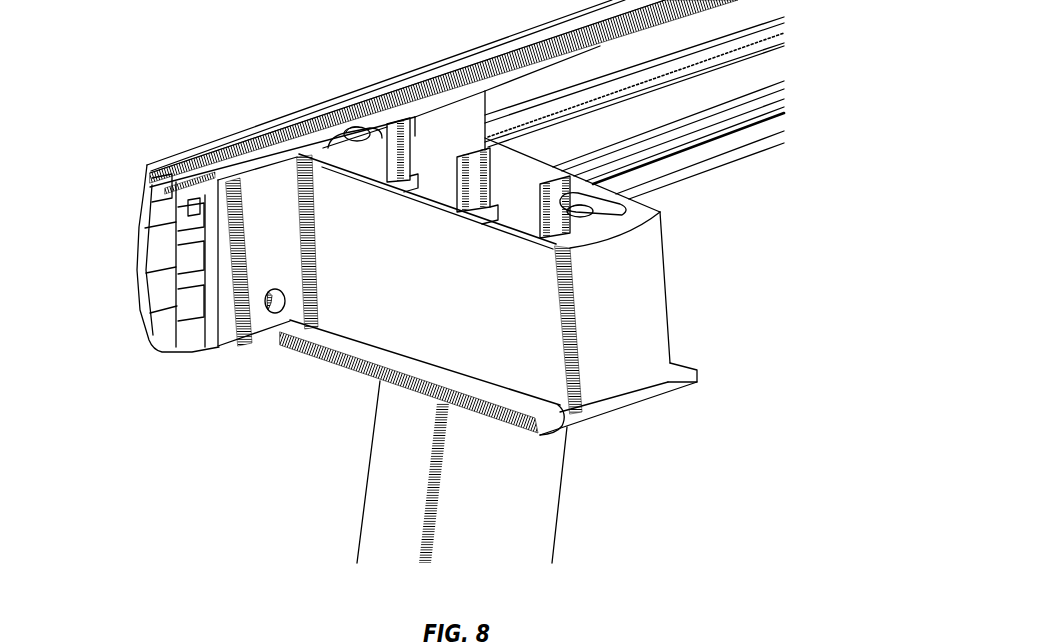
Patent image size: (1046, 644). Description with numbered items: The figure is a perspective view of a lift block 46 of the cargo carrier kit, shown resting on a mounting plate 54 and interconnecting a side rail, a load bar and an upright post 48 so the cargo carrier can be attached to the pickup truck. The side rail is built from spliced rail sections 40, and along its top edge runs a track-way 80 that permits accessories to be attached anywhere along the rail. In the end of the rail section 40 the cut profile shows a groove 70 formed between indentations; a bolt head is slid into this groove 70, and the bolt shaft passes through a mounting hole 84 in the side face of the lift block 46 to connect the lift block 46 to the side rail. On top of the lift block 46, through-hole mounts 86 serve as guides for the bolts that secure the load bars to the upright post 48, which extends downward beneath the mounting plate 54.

The rail section 40 is at (488, 40).
The track-way 80 is at (267, 143).
The through-hole mount 86 is at (352, 128).
The groove 70 is at (186, 294).
The lift block 46 is at (630, 365).
The mounting plate 54 is at (382, 362).
The upright post 48 is at (395, 468).
The mounting hole 84 is at (280, 313).